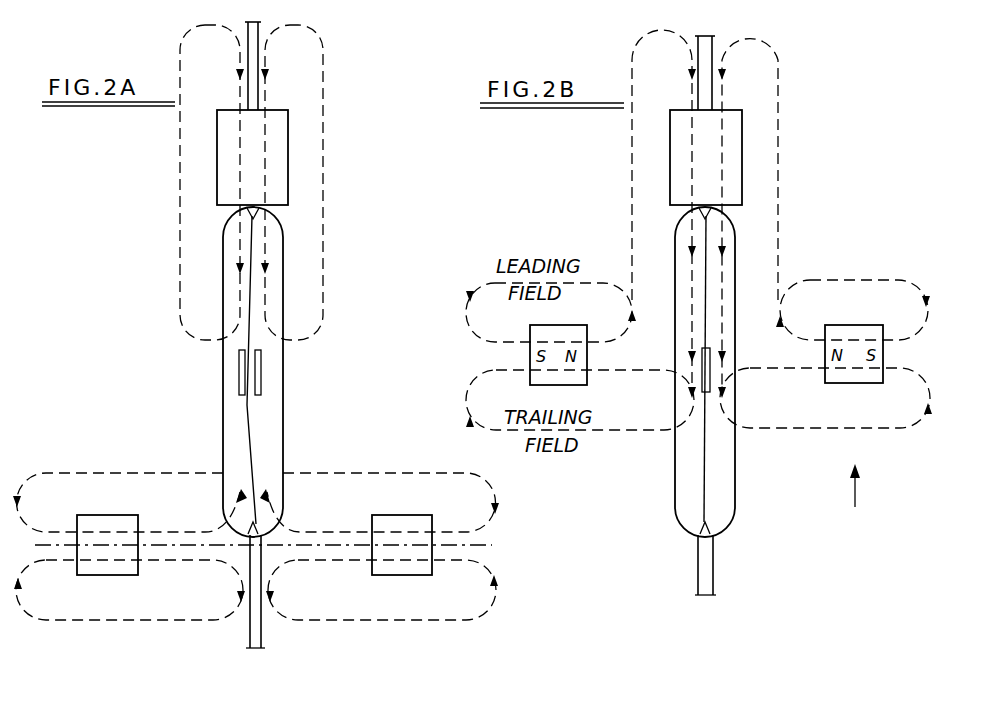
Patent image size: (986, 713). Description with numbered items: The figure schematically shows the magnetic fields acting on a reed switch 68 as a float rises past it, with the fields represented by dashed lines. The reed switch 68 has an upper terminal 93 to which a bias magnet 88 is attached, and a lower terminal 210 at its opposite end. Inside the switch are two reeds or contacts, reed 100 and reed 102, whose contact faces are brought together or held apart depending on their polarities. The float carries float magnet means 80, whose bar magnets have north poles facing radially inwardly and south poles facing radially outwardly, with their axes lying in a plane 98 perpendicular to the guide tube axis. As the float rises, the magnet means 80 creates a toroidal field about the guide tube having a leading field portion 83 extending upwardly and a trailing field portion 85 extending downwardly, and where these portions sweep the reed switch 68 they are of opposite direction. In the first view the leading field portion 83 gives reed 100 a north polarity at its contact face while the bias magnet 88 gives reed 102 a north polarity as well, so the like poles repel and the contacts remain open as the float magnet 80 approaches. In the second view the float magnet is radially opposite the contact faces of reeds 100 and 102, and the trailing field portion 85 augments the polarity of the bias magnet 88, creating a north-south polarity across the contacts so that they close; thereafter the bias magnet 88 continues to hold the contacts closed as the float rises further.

In FIG. 2A, the upper terminal 93 is at (258, 27).
In FIG. 2A, the bias magnet 88 is at (294, 157).
In FIG. 2B, the bias magnet 88 is at (732, 172).
In FIG. 2A, the reed or contact 102 is at (258, 340).
In FIG. 2B, the reed or contact 102 is at (708, 278).
In FIG. 2A, the reed switch 68 is at (284, 412).
In FIG. 2A, the reed or contact 100 is at (245, 407).
In FIG. 2B, the reed or contact 100 is at (705, 466).
In FIG. 2A, the float magnet means 80 is at (433, 570).
In FIG. 2A, the leading field portion 83 is at (117, 473).
In FIG. 2A, the trailing field portion 85 is at (82, 621).
In FIG. 2A, the plane 98 is at (492, 545).
In FIG. 2A, the lower terminal 210 is at (249, 634).